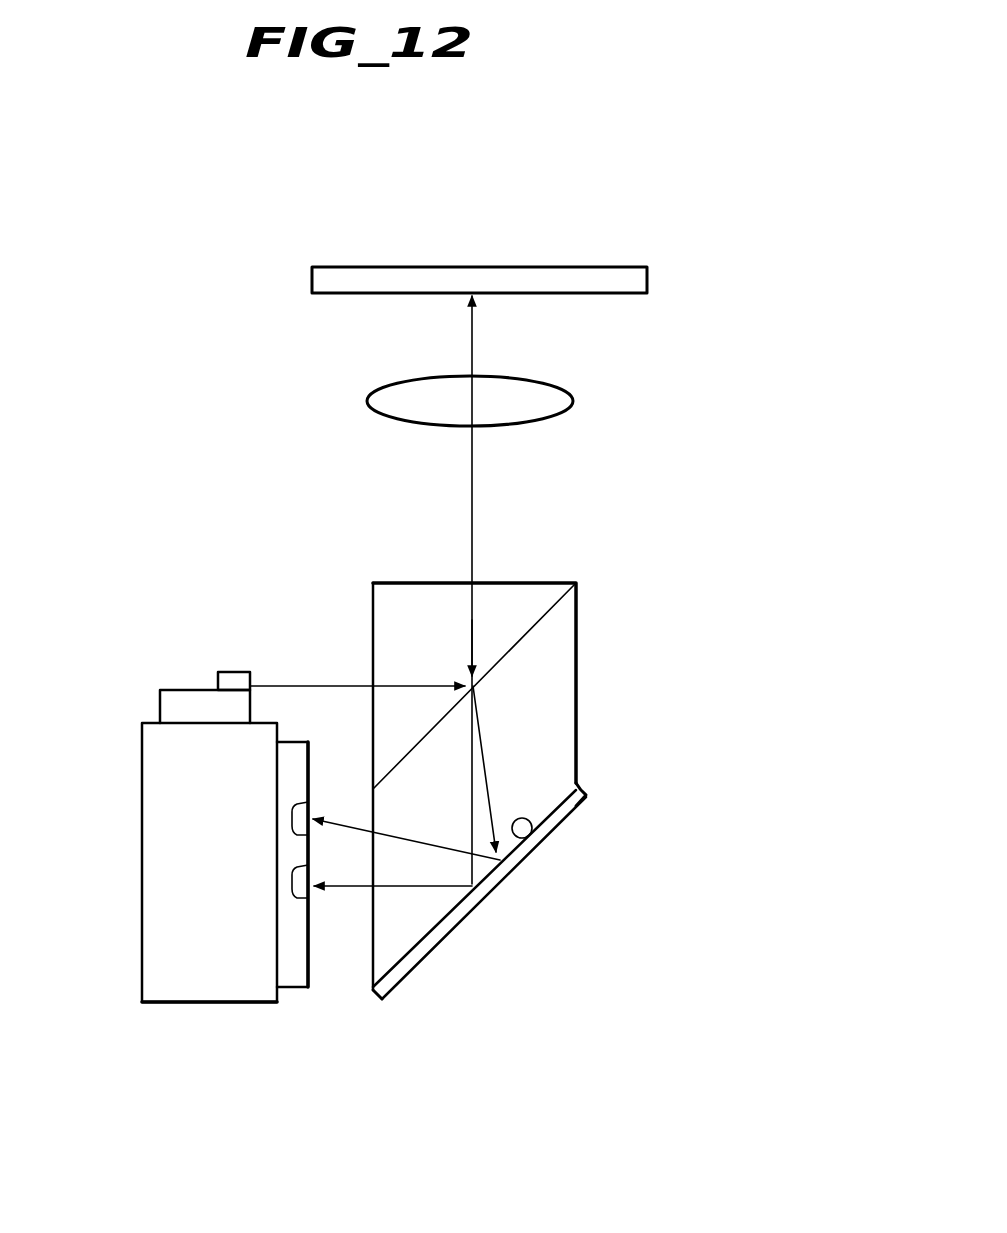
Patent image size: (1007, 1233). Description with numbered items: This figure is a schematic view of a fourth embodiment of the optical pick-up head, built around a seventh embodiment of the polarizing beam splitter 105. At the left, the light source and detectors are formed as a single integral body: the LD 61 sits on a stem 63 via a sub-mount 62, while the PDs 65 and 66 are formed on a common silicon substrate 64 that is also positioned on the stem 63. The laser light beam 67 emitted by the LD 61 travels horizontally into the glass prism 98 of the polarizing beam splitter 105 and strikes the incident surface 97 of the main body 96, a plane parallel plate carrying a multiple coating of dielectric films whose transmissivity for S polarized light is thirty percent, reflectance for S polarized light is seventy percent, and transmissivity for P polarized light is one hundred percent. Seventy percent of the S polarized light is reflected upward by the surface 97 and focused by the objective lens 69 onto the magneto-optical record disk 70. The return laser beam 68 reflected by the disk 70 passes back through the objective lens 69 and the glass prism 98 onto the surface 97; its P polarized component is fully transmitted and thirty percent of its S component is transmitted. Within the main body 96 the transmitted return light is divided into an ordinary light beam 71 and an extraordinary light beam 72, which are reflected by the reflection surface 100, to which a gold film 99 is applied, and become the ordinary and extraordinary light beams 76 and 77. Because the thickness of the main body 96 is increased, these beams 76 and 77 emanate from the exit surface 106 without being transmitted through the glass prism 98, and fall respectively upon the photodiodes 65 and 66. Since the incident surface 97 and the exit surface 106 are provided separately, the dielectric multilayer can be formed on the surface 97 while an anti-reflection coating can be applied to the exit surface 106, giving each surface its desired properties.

The LD 61 is at (230, 678).
The sub-mount 62 is at (173, 697).
The stem 63 is at (203, 987).
The common silicon substrate 64 is at (293, 977).
The PD 65 is at (302, 888).
The PD 66 is at (318, 802).
The laser light beam 67 is at (310, 684).
The return laser beam 68 is at (473, 483).
The objective lens 69 is at (573, 398).
The magneto-optical record disk 70 is at (647, 283).
The ordinary light beam 71 is at (480, 760).
The extraordinary light beam 72 is at (490, 797).
The ordinary light beam 76 is at (413, 887).
The extraordinary light beam 77 is at (438, 848).
The main body 96 is at (560, 758).
The incident surface 97 is at (548, 613).
The glass prism 98 is at (533, 596).
The gold film 99 is at (503, 867).
The reflection surface 100 is at (532, 832).
The polarizing beam splitter 105 is at (590, 664).
The exit surface 106 is at (368, 948).